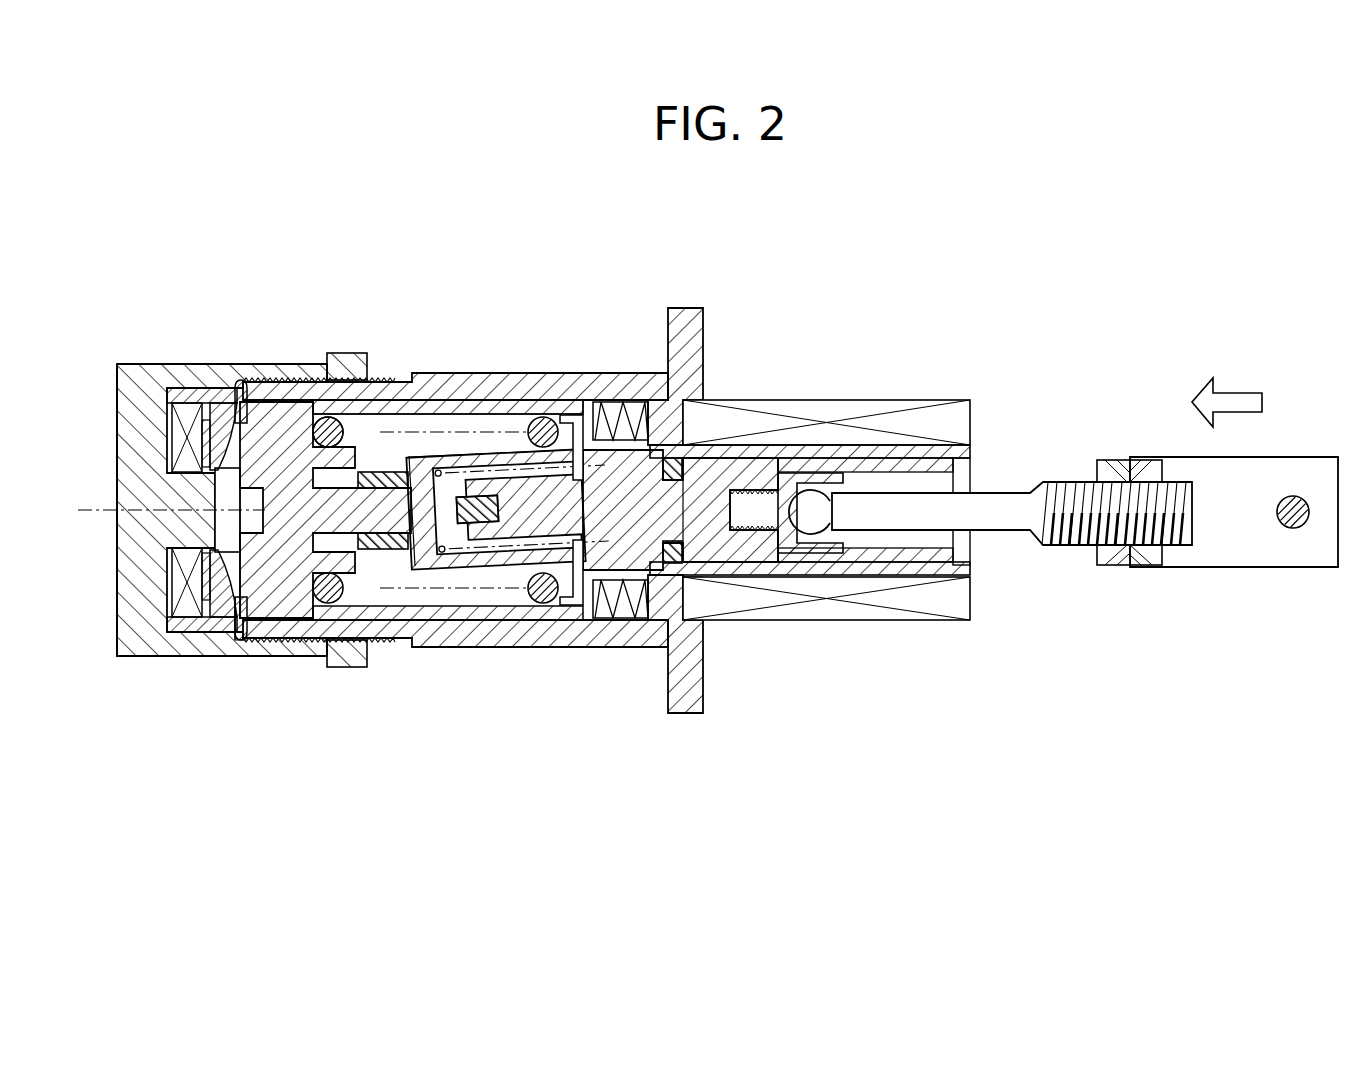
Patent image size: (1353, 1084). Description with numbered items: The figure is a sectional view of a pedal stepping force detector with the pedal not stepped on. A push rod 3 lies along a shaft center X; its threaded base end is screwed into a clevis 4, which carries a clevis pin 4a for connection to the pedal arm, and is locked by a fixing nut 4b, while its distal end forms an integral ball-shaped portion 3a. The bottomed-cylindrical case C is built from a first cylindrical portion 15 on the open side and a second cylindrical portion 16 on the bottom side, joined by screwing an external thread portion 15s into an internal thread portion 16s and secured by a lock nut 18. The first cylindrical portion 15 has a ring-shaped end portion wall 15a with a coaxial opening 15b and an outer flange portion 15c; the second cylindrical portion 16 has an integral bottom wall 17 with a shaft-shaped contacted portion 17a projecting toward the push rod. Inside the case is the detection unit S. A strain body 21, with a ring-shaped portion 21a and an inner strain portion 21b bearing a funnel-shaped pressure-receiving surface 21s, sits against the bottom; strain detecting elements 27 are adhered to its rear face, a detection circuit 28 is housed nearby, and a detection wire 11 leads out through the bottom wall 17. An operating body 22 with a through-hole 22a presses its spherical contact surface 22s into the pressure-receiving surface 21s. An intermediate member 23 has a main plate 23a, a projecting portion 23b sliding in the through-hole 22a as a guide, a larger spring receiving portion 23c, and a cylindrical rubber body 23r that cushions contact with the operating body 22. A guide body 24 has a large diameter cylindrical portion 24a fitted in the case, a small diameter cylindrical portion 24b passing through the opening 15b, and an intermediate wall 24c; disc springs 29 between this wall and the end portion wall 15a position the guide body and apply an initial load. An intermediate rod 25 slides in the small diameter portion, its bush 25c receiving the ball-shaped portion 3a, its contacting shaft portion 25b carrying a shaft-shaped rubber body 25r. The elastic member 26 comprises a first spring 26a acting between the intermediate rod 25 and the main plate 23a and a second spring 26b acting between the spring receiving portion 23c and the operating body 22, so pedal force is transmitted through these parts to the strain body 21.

The push rod 3 is at (990, 532).
The ball-shaped portion 3a is at (808, 515).
The clevis 4 is at (1253, 568).
The clevis pin 4a is at (1300, 497).
The fixing nut 4b is at (1113, 460).
The detection wire 11 is at (63, 581).
The first cylindrical portion 15 is at (503, 373).
The end portion wall 15a is at (685, 590).
The opening 15b is at (705, 470).
The flange portion 15c is at (703, 322).
The external thread portion 15s is at (396, 380).
The second cylindrical portion 16 is at (222, 362).
The internal thread portion 16s is at (292, 640).
The bottom wall 17 is at (117, 425).
The contacted portion 17a is at (193, 527).
The lock nut 18 is at (348, 352).
The strain body 21 is at (225, 617).
The ring-shaped portion 21a is at (193, 627).
The strain portion 21b is at (258, 627).
The pressure-receiving surface 21s is at (268, 676).
The operating body 22 is at (282, 622).
The through-hole 22a is at (288, 525).
The contact surface 22s is at (208, 437).
The intermediate member 23 is at (425, 568).
The main plate 23a is at (412, 511).
The projecting portion 23b is at (310, 487).
The spring receiving portion 23c is at (545, 602).
The cylindrical rubber body 23r is at (383, 550).
The guide body 24 is at (448, 328).
The large diameter cylindrical portion 24a is at (520, 398).
The small diameter cylindrical portion 24b is at (975, 450).
The intermediate wall 24c is at (616, 610).
The intermediate rod 25 is at (768, 468).
The contacting shaft portion 25b is at (578, 478).
The bush 25c is at (830, 553).
The shaft-shaped rubber body 25r is at (470, 500).
The elastic member 26 is at (401, 517).
The first spring 26a is at (487, 572).
The second spring 26b is at (312, 424).
The strain detecting elements 27 is at (172, 395).
The detection circuit 28 is at (173, 600).
The disc springs 29 is at (618, 408).
The case C is at (462, 350).
The detection unit S is at (236, 392).
The shaft center X is at (160, 509).